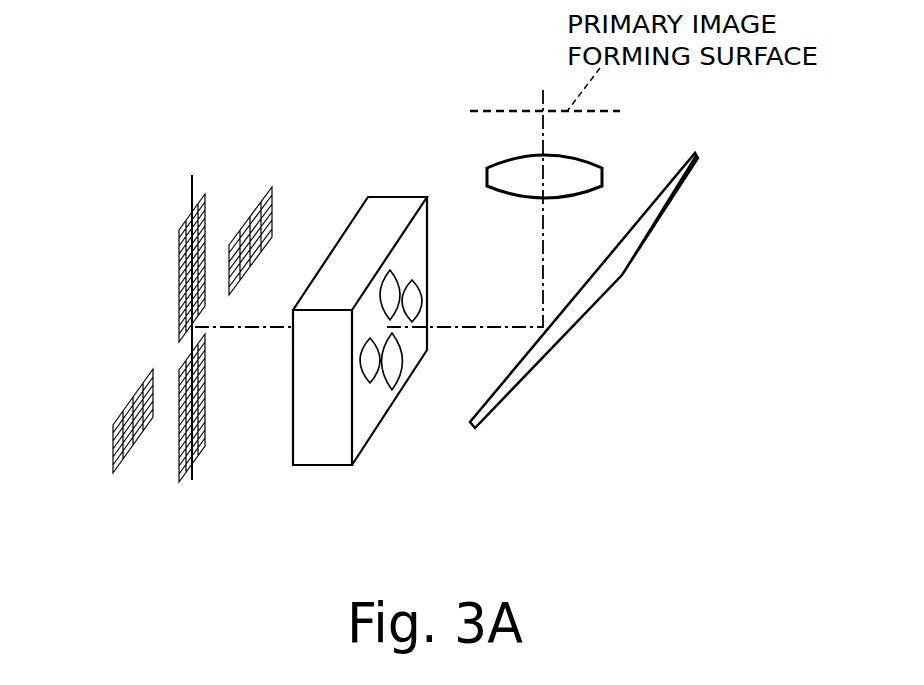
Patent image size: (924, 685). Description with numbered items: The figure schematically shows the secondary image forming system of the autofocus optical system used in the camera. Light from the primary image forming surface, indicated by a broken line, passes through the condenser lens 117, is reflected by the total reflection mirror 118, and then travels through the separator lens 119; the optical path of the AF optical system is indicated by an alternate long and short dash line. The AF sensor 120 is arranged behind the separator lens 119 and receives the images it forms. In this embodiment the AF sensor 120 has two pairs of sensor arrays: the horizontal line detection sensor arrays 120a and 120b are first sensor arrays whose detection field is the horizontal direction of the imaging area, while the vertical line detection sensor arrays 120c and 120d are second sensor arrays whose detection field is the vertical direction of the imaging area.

The AF sensor 120 is at (250, 150).
The horizontal line detection sensor array 120a is at (179, 250).
The horizontal line detection sensor array 120b is at (205, 447).
The vertical line detection sensor array 120c is at (270, 202).
The vertical line detection sensor array 120d is at (113, 463).
The separator lens 119 is at (392, 398).
The condenser lens 117 is at (585, 158).
The total reflection mirror 118 is at (662, 223).